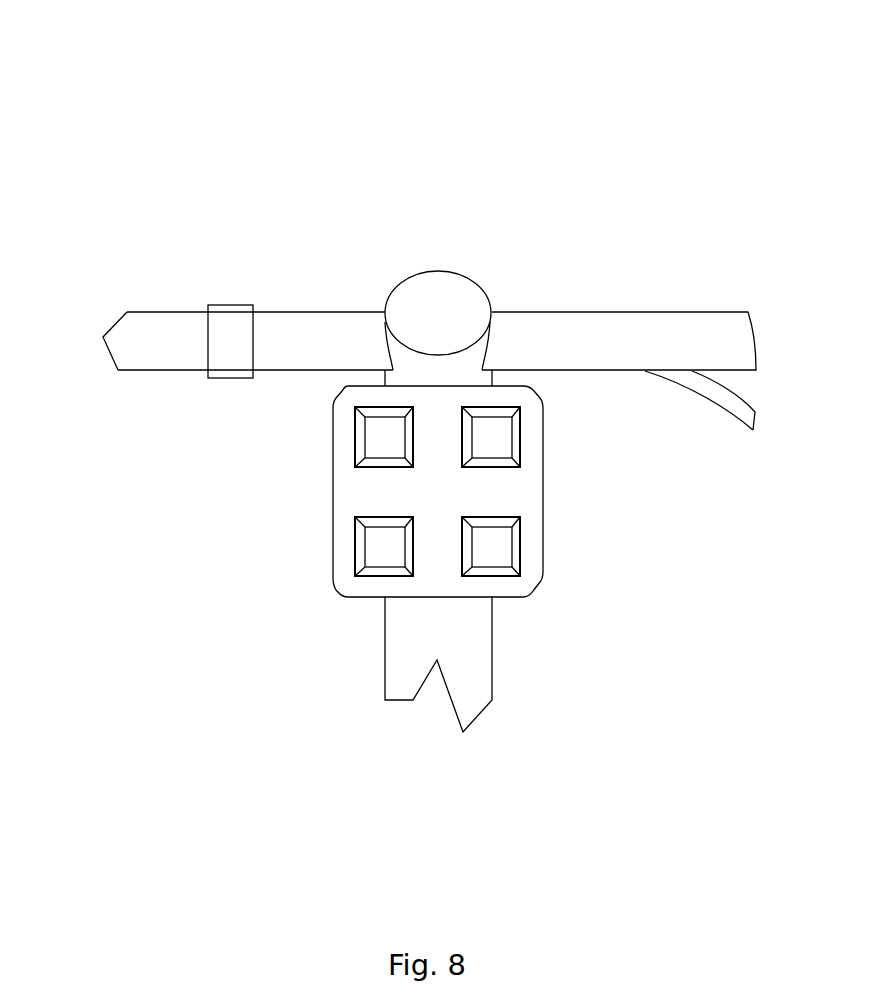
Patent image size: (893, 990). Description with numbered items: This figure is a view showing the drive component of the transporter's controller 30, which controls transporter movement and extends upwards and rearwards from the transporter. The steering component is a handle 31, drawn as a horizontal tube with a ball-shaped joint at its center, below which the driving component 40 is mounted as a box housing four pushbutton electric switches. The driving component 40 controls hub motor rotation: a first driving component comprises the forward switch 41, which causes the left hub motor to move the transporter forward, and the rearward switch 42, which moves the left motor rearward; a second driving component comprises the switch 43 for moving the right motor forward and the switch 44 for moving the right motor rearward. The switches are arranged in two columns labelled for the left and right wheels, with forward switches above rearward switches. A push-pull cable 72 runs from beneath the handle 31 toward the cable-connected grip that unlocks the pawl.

The controller 30 is at (477, 202).
The handle 31 is at (288, 312).
The push-pull cable 72 is at (740, 397).
The driving component 40 is at (563, 610).
The forward switch 41 is at (355, 437).
The rearward switch 42 is at (355, 543).
The switch 43 is at (520, 437).
The switch 44 is at (520, 545).